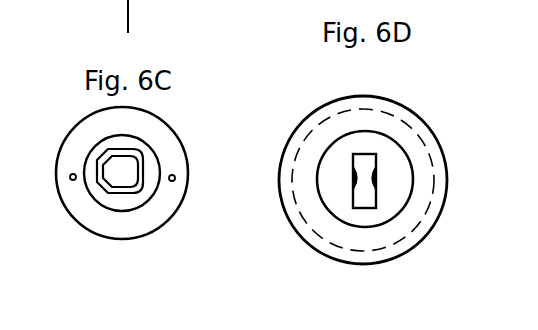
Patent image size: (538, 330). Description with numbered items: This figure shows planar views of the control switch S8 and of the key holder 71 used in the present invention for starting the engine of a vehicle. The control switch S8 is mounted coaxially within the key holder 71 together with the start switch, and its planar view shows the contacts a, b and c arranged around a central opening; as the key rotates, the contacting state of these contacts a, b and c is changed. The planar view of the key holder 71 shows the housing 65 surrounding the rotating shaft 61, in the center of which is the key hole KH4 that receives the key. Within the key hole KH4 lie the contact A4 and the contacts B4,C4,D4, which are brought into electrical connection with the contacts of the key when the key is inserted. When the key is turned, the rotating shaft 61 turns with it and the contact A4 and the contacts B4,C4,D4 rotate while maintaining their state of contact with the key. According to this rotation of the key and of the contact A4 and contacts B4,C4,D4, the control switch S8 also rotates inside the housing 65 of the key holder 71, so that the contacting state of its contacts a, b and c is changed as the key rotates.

In FIG. 6C, the control switch S8 is at (118, 239).
In FIG. 6C, the contact a is at (72, 173).
In FIG. 6C, the contact b is at (114, 178).
In FIG. 6C, the contact c is at (175, 174).
In FIG. 6D, the housing 65 is at (337, 100).
In FIG. 6D, the key holder 71 is at (432, 231).
In FIG. 6D, the rotating shaft 61 is at (333, 180).
In FIG. 6D, the contact A4 is at (376, 180).
In FIG. 6D, the key hole KH4 is at (370, 162).
In FIG. 6D, the contacts B4,C4,D4 is at (355, 197).